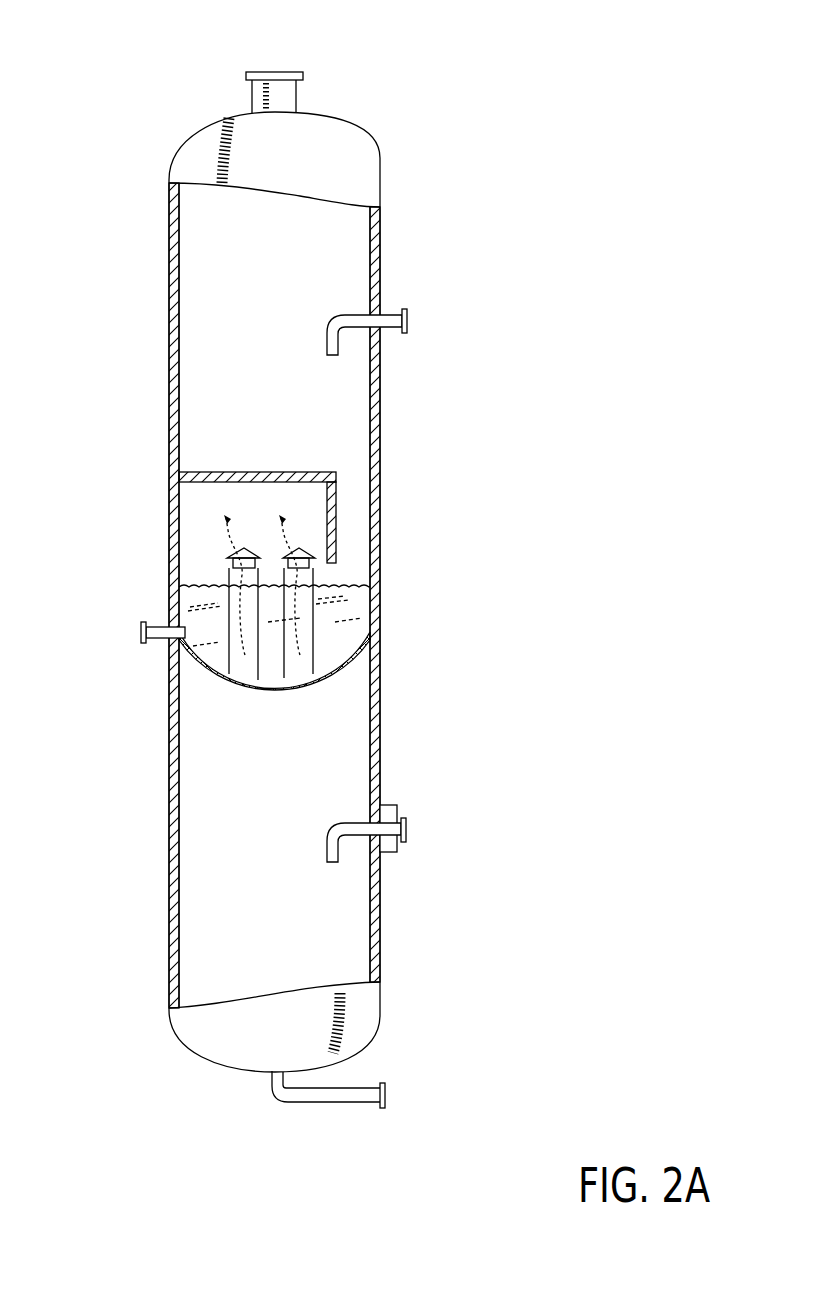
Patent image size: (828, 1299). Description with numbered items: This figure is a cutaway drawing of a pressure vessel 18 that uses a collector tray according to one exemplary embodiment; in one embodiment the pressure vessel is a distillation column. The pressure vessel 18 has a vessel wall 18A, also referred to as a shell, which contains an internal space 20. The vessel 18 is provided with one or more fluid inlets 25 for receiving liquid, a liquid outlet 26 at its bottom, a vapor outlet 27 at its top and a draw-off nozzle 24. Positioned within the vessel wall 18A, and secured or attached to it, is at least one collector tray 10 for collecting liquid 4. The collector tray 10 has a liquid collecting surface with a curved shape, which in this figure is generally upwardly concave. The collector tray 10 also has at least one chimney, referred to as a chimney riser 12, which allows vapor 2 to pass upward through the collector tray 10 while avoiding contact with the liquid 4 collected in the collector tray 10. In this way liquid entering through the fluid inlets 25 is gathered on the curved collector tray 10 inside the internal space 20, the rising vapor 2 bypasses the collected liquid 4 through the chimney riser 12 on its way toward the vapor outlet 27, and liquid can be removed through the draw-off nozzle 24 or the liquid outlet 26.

The pressure vessel 18 is at (383, 198).
The vessel wall 18A is at (169, 305).
The internal space 20 is at (210, 278).
The vapor outlet 27 is at (272, 72).
The fluid inlet 25 is at (407, 320).
The chimney riser 12 is at (313, 575).
The vapor 2 is at (230, 540).
The liquid 4 is at (192, 598).
The collector tray 10 is at (343, 677).
The draw-off nozzle 24 is at (141, 632).
The liquid outlet 26 is at (340, 1088).